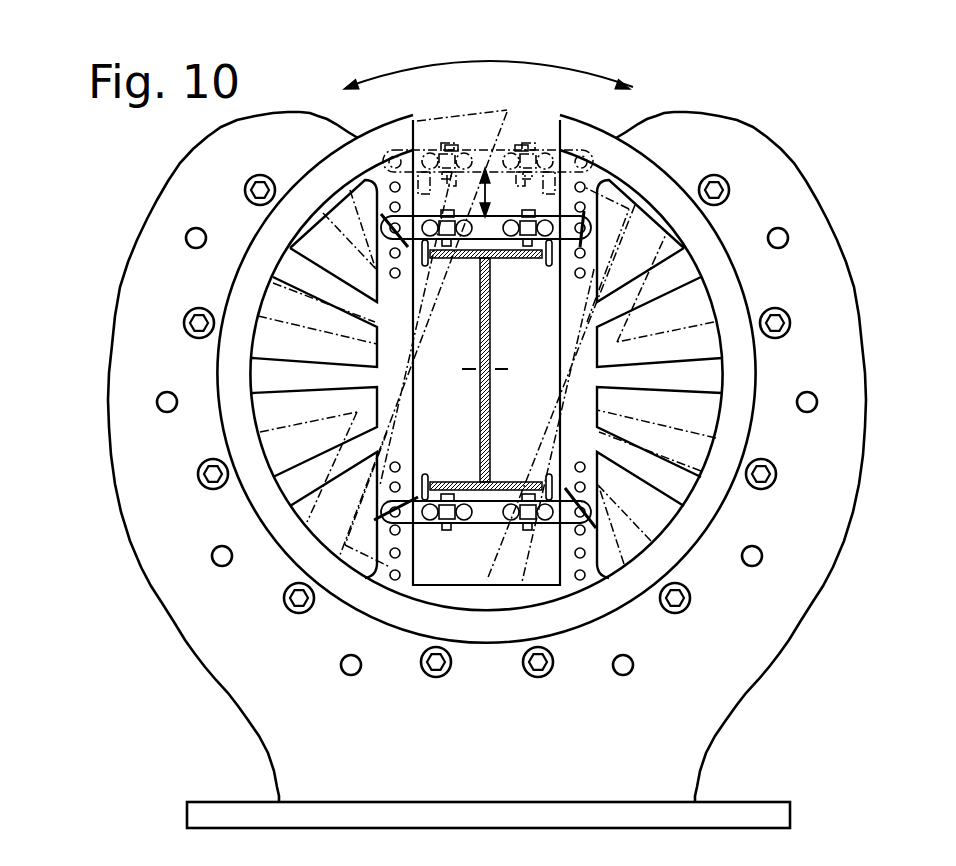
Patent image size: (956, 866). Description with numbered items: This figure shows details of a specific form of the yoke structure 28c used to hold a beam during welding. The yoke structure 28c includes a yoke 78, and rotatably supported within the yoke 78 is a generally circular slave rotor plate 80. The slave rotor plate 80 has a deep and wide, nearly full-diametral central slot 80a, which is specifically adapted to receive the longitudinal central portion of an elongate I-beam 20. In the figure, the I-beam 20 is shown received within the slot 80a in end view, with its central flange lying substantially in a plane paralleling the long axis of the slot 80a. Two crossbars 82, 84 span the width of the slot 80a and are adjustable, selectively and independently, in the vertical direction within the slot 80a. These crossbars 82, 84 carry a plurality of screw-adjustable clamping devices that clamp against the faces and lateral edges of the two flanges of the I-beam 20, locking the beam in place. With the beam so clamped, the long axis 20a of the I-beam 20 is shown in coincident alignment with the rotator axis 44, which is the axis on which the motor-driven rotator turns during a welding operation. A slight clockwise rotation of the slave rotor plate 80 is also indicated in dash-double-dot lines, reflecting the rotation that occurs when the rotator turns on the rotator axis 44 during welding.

The yoke structure 28c is at (92, 335).
The yoke 78 is at (113, 393).
The slave rotor plate 80 is at (230, 415).
The central slot 80a is at (414, 136).
The crossbar 82 is at (549, 215).
The crossbar 84 is at (493, 522).
The I-beam 20 is at (493, 333).
The long axis 20a is at (470, 439).
The rotator axis 44 is at (483, 369).